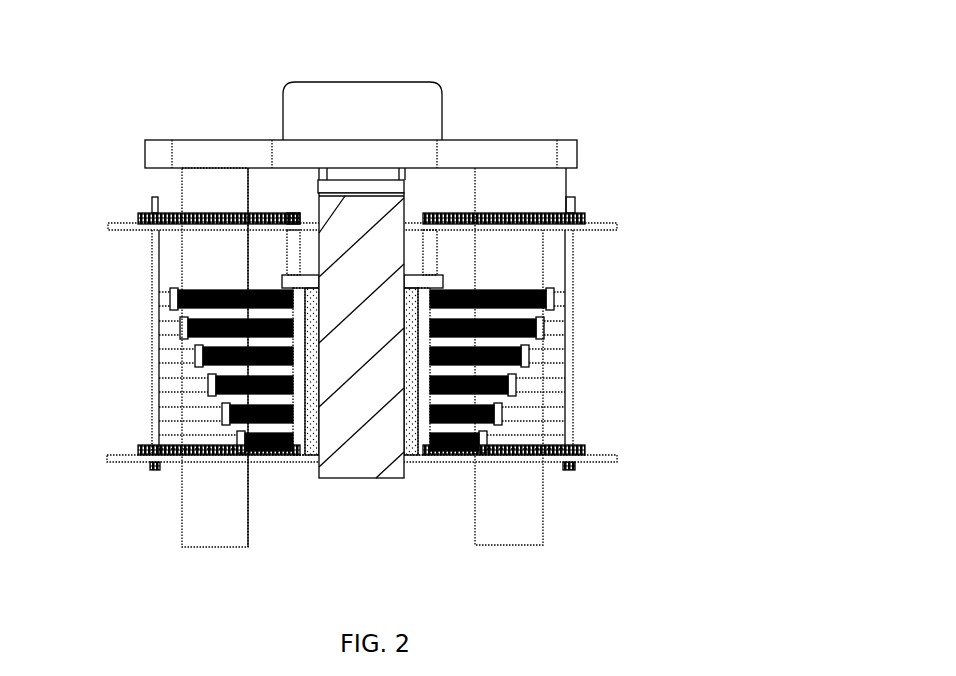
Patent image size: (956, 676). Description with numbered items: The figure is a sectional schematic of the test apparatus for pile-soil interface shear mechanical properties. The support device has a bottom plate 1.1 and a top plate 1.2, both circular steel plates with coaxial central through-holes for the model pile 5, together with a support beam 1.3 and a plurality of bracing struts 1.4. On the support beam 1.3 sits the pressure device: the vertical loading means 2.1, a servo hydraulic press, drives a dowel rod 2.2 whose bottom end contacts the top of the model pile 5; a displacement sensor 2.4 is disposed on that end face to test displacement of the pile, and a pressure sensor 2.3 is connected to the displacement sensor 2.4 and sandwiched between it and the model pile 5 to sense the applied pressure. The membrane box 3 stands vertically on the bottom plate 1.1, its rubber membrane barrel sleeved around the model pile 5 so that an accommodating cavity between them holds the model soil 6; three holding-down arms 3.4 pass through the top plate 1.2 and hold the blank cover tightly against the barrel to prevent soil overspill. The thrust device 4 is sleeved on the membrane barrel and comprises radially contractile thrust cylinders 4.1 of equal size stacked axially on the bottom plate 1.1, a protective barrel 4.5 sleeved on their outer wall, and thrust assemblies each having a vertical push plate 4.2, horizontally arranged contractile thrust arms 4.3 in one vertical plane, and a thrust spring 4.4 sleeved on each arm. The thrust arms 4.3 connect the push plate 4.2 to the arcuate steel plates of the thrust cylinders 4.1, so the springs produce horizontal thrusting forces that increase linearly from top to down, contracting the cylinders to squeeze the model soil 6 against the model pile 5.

The bottom plate 1.1 is at (587, 453).
The top plate 1.2 is at (613, 225).
The support beam 1.3 is at (470, 153).
The bracing struts 1.4 is at (517, 515).
The vertical loading means 2.1 is at (375, 108).
The dowel rod 2.2 is at (383, 163).
The pressure sensor 2.3 is at (320, 190).
The displacement sensor 2.4 is at (324, 172).
The membrane box 3 is at (413, 458).
The holding-down arms 3.4 is at (293, 252).
The thrust device 4 is at (563, 302).
The thrust cylinders 4.1 is at (282, 290).
The push plate 4.2 is at (160, 338).
The thrust arms 4.3 is at (177, 413).
The thrust springs 4.4 is at (552, 370).
The protective barrel 4.5 is at (505, 418).
The model pile 5 is at (443, 270).
The model soil 6 is at (313, 437).